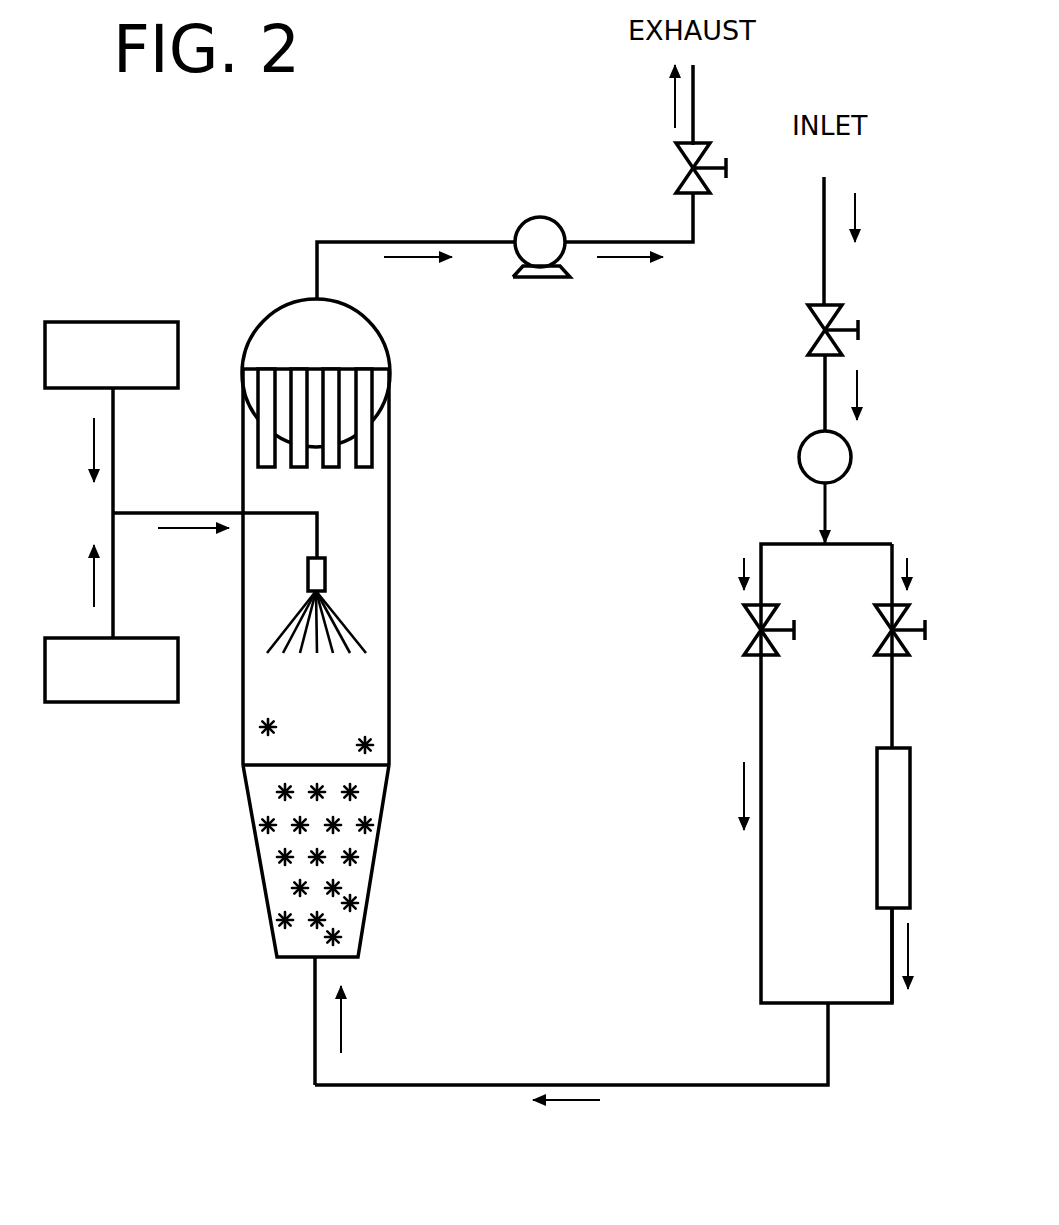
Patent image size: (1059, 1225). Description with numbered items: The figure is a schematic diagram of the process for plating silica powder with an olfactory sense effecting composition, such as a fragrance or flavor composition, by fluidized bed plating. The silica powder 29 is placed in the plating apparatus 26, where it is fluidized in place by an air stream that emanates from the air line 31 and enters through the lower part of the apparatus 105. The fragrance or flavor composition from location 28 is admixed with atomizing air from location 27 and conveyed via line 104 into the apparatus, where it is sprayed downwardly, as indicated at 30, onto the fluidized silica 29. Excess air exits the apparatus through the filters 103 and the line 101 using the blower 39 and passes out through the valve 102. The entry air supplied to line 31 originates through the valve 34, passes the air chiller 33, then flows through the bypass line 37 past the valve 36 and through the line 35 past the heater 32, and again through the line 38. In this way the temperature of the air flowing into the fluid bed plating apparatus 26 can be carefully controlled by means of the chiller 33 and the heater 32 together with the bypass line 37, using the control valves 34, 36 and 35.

The plating apparatus 26 is at (240, 290).
The atomizing air location 27 is at (95, 340).
The olfactory sense effecting composition location 28 is at (96, 668).
The silica powder 29 is at (362, 863).
The downward conveyance of composition 30 is at (347, 621).
The air line 31 is at (535, 1085).
The heater 32 is at (893, 812).
The air chiller 33 is at (792, 452).
The valve 34 is at (813, 322).
The line 35 is at (890, 653).
The valve 36 is at (760, 632).
The bypass line 37 is at (760, 842).
The line 38 is at (893, 955).
The blower 39 is at (547, 240).
The line 101 is at (404, 241).
The valve 102 is at (708, 197).
The filters 103 is at (374, 483).
The line 104 is at (292, 513).
The lower part of the apparatus 105 is at (292, 960).